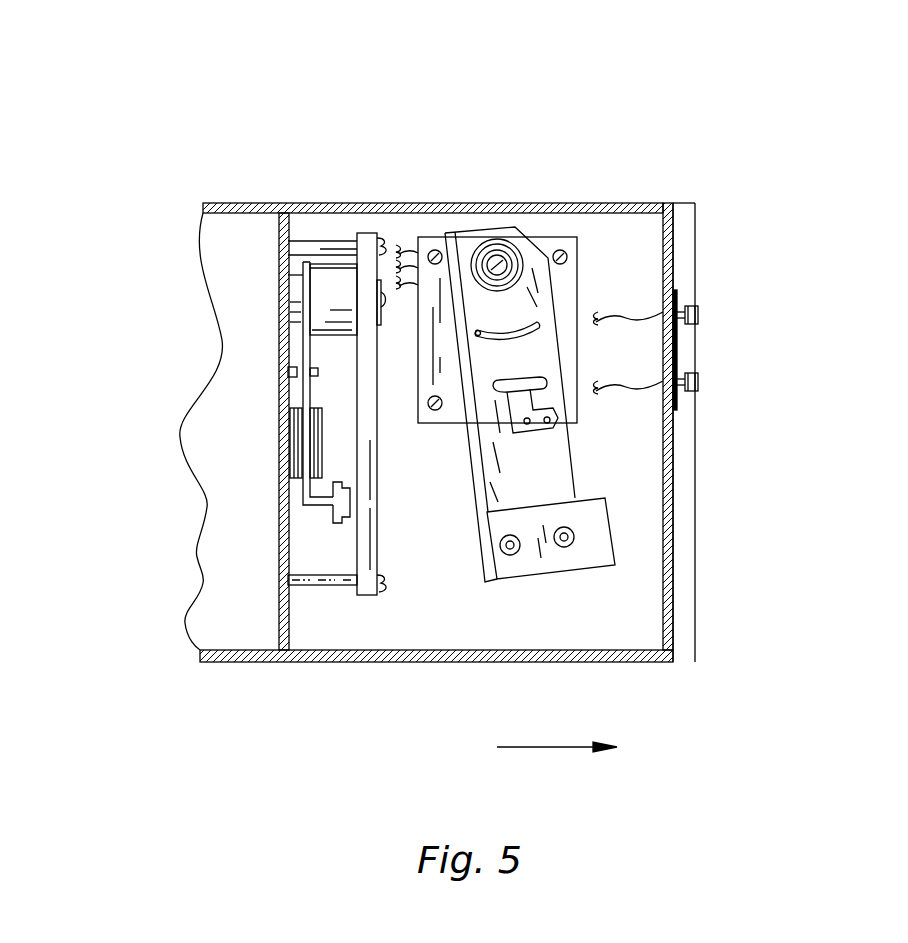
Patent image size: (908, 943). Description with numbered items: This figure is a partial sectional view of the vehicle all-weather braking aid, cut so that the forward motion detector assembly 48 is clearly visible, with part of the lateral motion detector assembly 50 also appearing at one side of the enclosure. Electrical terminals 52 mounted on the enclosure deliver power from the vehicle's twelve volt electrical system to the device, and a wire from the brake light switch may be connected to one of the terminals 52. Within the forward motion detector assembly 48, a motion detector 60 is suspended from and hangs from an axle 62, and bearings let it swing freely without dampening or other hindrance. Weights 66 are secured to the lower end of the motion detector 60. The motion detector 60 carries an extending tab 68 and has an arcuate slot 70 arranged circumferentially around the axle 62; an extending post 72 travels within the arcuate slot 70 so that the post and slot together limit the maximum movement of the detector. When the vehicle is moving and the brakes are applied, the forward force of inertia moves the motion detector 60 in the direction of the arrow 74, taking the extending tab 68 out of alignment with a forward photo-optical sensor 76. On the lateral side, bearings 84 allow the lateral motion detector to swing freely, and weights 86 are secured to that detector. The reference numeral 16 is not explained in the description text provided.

The door 16 is at (697, 222).
The forward motion detector assembly 48 is at (768, 416).
The lateral motion detector assembly 50 is at (148, 283).
The electrical terminals 52 is at (699, 312).
The motion detector 60 is at (540, 255).
The axle 62 is at (497, 265).
The weights 66 is at (602, 552).
The extending tab 68 is at (553, 430).
The arcuate slot 70 is at (538, 325).
The extending post 72 is at (455, 237).
The arrow 74 is at (545, 747).
The forward photo-optical sensor 76 is at (719, 432).
The bearings 84 is at (327, 275).
The weights 86 is at (292, 440).